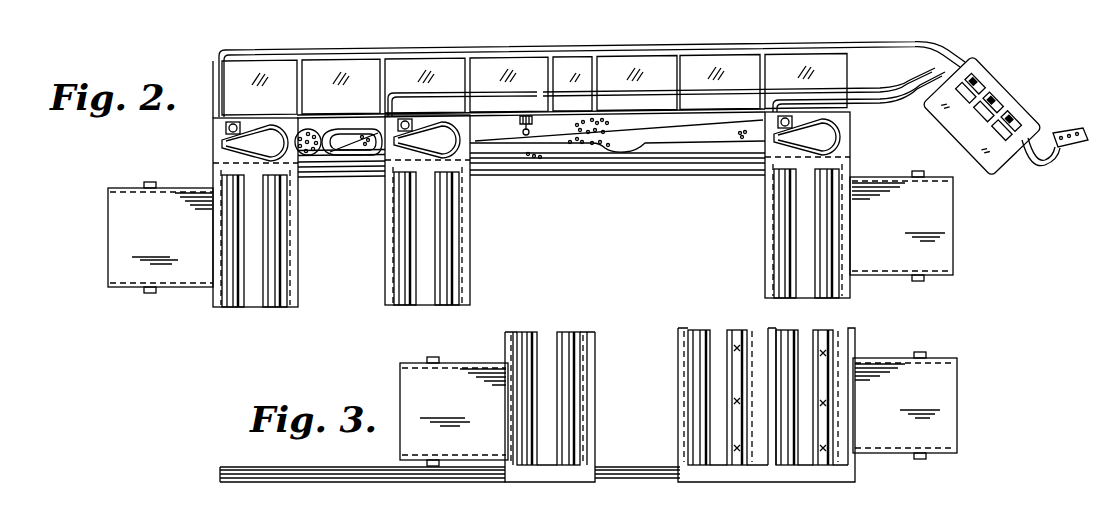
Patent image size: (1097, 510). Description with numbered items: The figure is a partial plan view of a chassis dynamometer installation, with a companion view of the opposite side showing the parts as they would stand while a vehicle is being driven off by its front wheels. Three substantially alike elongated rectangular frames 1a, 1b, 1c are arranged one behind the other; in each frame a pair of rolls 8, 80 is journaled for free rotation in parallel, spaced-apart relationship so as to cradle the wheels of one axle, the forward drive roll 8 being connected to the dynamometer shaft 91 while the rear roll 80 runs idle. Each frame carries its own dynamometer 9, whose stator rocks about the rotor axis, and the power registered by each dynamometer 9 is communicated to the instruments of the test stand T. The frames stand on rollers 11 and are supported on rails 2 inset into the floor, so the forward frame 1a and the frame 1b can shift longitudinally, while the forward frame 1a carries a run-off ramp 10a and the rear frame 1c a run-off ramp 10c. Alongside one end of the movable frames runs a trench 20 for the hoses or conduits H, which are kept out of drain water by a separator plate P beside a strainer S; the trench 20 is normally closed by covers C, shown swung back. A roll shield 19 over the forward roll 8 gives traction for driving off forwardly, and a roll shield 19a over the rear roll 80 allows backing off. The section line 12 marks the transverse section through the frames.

In FIG. 2, the deck plates or covers C is at (247, 70).
In FIG. 2, the strainer S is at (325, 133).
In FIG. 2, the dynamometer 9 is at (228, 142).
In FIG. 2, the trench 20 is at (625, 120).
In FIG. 2, the rails 2 is at (583, 165).
In FIG. 3, the rails 2 is at (370, 480).
In FIG. 2, the hoses or conduits H is at (678, 130).
In FIG. 2, the separator plate P is at (704, 150).
In FIG. 2, the dynamometer shaft 91 is at (826, 168).
In FIG. 2, the test stand T is at (1003, 97).
In FIG. 2, the run-off ramp 10a is at (937, 185).
In FIG. 3, the run-off ramp 10a is at (952, 392).
In FIG. 2, the run-off ramp 10c is at (118, 257).
In FIG. 3, the run-off ramp 10c is at (420, 385).
In FIG. 2, the roll shield 19a is at (229, 235).
In FIG. 3, the roll shield 19a is at (520, 417).
In FIG. 2, the roll shield 19 is at (275, 253).
In FIG. 3, the roll shield 19 is at (572, 414).
In FIG. 2, the forward frame 1a is at (768, 286).
In FIG. 3, the forward frame 1a is at (850, 348).
In FIG. 2, the frame 1b is at (470, 285).
In FIG. 3, the frame 1b is at (680, 362).
In FIG. 2, the rear frame 1c is at (298, 287).
In FIG. 3, the rear frame 1c is at (555, 482).
In FIG. 2, the idle roll 80 is at (232, 298).
In FIG. 3, the idle roll 80 is at (527, 333).
In FIG. 2, the drive roll 8 is at (262, 300).
In FIG. 3, the drive roll 8 is at (553, 340).
In FIG. 2, the rollers 11 is at (297, 22).
In FIG. 3, the section line 12- 12 is at (832, 433).